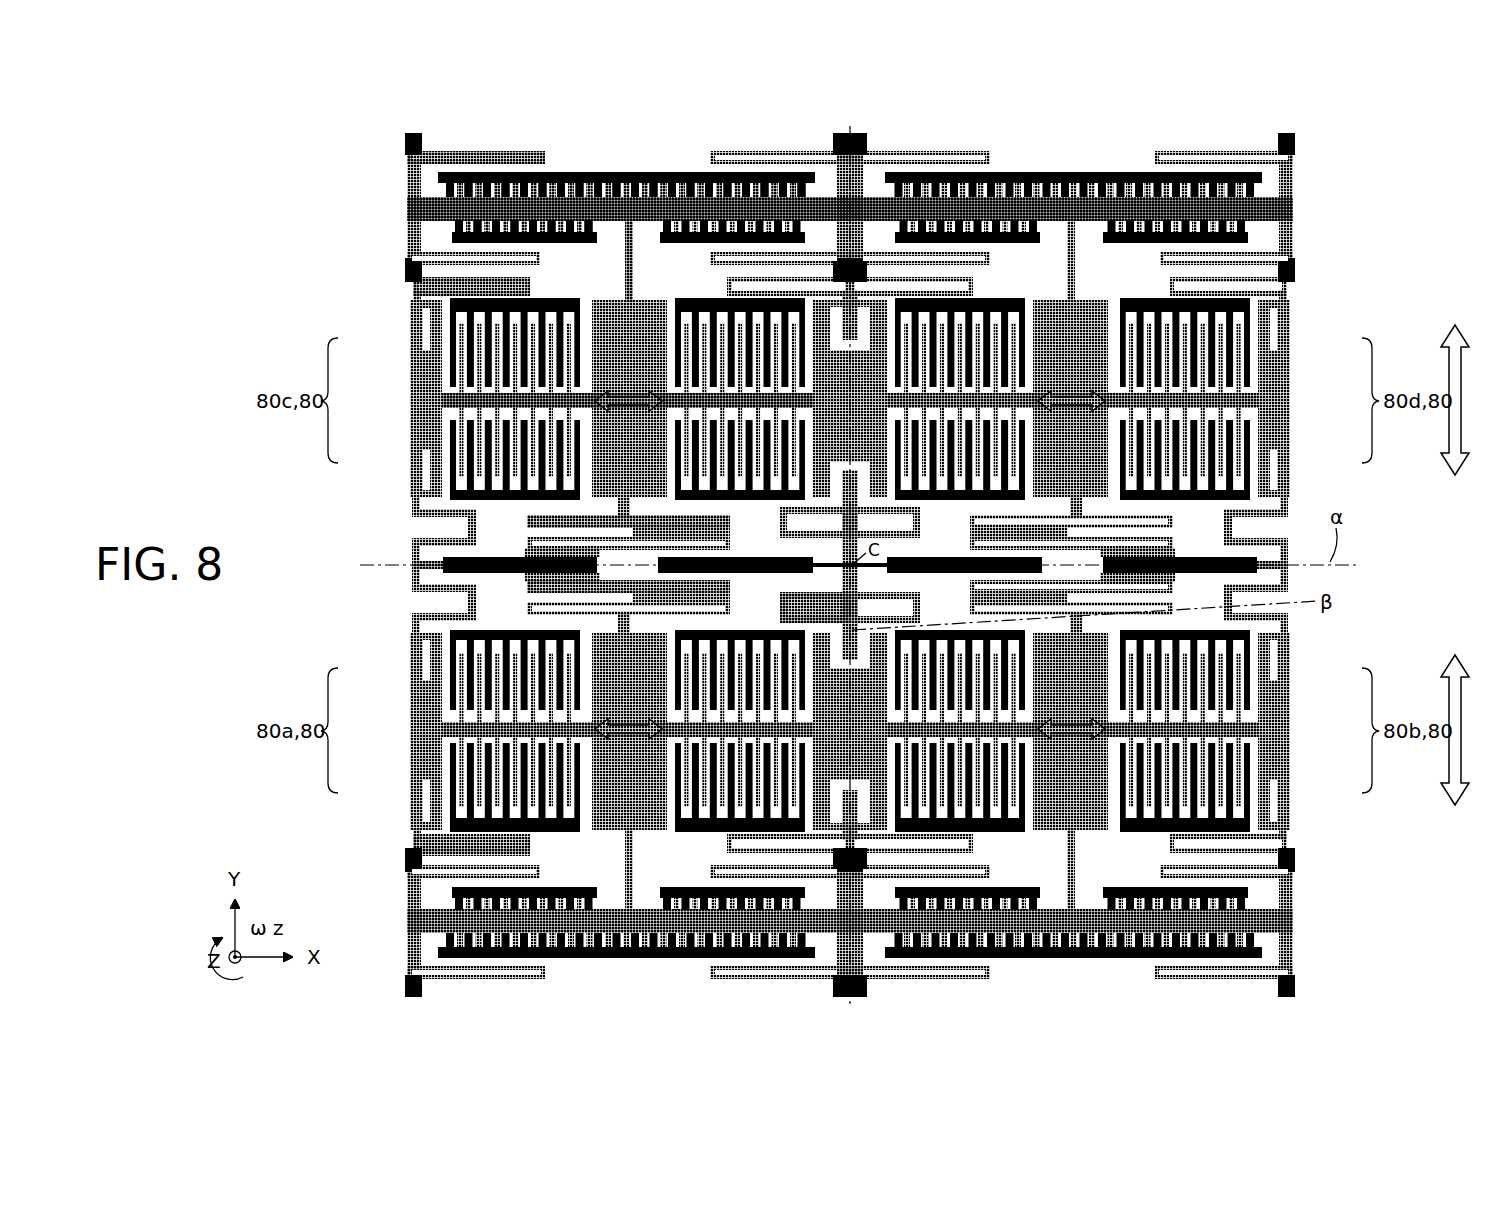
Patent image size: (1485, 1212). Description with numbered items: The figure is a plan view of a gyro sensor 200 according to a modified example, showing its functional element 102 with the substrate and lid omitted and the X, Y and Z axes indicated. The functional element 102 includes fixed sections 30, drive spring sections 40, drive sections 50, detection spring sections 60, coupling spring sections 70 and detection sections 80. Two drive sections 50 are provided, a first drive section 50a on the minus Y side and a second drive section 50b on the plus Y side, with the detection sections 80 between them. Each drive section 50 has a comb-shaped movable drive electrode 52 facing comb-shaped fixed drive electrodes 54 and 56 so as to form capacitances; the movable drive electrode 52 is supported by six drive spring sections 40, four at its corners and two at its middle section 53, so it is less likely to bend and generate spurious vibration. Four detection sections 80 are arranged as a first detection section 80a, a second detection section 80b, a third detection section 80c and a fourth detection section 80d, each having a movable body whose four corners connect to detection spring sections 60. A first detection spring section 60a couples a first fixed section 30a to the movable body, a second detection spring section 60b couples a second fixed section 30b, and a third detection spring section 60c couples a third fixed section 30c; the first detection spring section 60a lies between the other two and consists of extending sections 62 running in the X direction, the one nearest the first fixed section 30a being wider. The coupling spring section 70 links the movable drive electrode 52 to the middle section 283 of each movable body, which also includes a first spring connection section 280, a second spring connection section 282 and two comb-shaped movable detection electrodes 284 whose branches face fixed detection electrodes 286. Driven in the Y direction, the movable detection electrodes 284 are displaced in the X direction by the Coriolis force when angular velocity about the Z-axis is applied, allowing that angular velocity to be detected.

The fixed section 30 is at (405, 145).
The first fixed section 30a is at (443, 563).
The second fixed section 30b is at (520, 565).
The third fixed section 30c is at (760, 557).
The drive spring section 40 is at (545, 157).
The drive section 50 is at (850, 209).
The first drive section 50a is at (1350, 905).
The second drive section 50b is at (1333, 208).
The movable drive electrode 52 is at (1240, 212).
The middle section 53 is at (855, 215).
The fixed drive electrode 54 is at (452, 238).
The fixed drive electrode 56 is at (438, 180).
The detection spring section 60 is at (413, 287).
The first detection spring section 60a is at (530, 580).
The second detection spring section 60b is at (413, 640).
The third detection spring section 60c is at (785, 615).
The extending section 62 is at (725, 590).
The coupling spring section 70 is at (625, 285).
The detection section 80 is at (627, 399).
The first detection section 80a is at (627, 729).
The second detection section 80b is at (1072, 729).
The third detection section 80c is at (627, 400).
The fourth detection section 80d is at (1072, 400).
The functional element 102 is at (333, 175).
The gyro sensor 200 is at (1364, 180).
The first spring connection section 280 is at (440, 365).
The second spring connection section 282 is at (800, 470).
The middle section 283 is at (690, 458).
The movable detection electrode 284 is at (617, 440).
The fixed detection electrode 286 is at (565, 298).